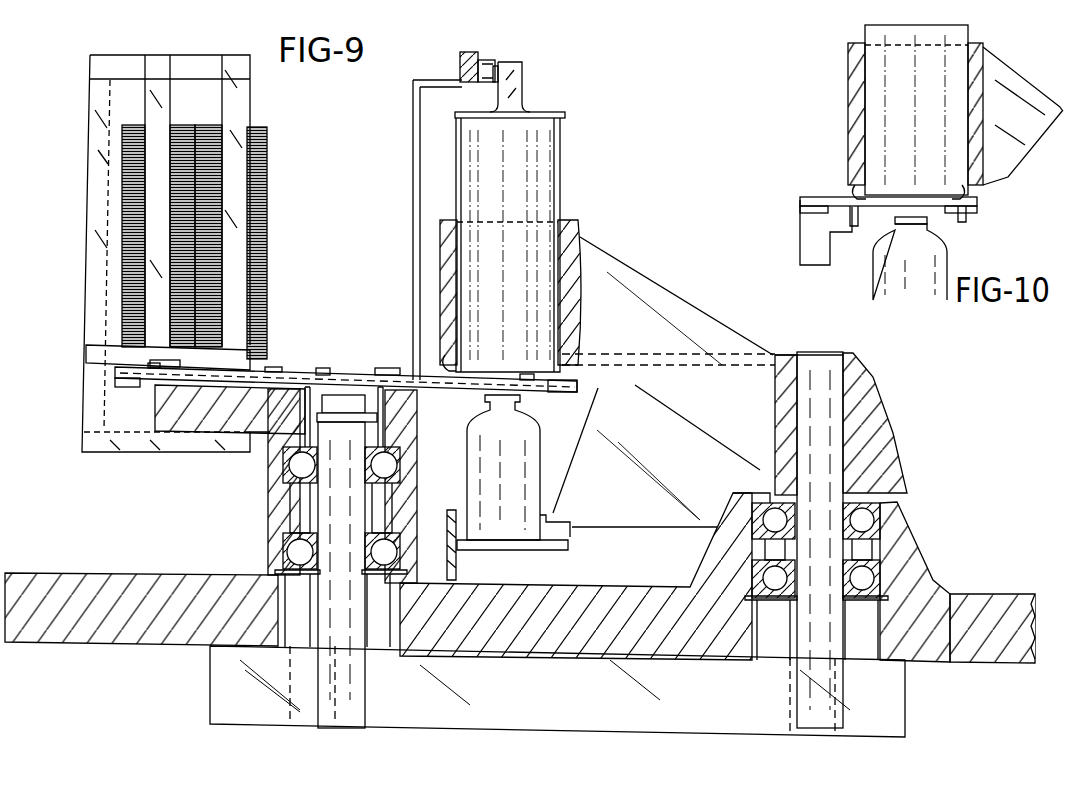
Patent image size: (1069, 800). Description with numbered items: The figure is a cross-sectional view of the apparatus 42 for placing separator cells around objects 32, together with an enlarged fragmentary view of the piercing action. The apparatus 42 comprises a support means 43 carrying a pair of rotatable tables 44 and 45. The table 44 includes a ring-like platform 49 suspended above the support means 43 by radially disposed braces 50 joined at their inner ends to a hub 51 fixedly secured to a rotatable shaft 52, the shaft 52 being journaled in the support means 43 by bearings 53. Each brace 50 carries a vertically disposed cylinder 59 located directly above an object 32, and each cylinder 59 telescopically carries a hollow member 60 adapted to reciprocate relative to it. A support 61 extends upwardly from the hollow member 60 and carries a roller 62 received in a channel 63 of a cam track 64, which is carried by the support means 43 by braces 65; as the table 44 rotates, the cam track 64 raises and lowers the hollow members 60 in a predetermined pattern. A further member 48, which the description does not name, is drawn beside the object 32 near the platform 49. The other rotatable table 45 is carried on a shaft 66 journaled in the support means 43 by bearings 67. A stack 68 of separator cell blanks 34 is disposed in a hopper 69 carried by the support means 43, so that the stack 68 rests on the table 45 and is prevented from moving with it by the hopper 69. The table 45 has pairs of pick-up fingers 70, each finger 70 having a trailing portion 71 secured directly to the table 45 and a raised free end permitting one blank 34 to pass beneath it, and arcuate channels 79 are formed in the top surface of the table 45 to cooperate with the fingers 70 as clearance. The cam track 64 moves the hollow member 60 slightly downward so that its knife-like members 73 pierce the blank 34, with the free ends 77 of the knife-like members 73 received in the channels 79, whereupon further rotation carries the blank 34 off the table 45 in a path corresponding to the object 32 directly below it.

In FIG. 9, the object 32 is at (515, 456).
In FIG. 10, the object 32 is at (923, 280).
In FIG. 9, the separator cell blank 34 is at (267, 195).
In FIG. 10, the separator cell blank 34 is at (930, 224).
In FIG. 9, the apparatus 42 is at (640, 212).
In FIG. 9, the support means 43 is at (530, 654).
In FIG. 9, the rotatable table 44 is at (895, 461).
In FIG. 9, the rotatable table 45 is at (122, 378).
In FIG. 10, the rotatable table 45 is at (800, 200).
In FIG. 9, the bottle guide bracket 48 is at (446, 542).
In FIG. 9, the ring-like platform 49 is at (553, 544).
In FIG. 9, the brace 50 is at (664, 314).
In FIG. 9, the hub 51 is at (851, 376).
In FIG. 9, the shaft 52 is at (820, 354).
In FIG. 9, the bearings 53 is at (873, 518).
In FIG. 9, the cylinder 59 is at (567, 236).
In FIG. 9, the hollow member 60 is at (552, 180).
In FIG. 9, the support 61 is at (520, 84).
In FIG. 9, the roller 62 is at (498, 68).
In FIG. 9, the channel 63 is at (468, 50).
In FIG. 9, the cam track 64 is at (486, 58).
In FIG. 9, the braces 65 is at (413, 202).
In FIG. 9, the shaft 66 is at (326, 636).
In FIG. 9, the bearings 67 is at (300, 546).
In FIG. 9, the stack 68 is at (262, 130).
In FIG. 9, the hopper 69 is at (86, 182).
In FIG. 9, the pick-up finger 70 is at (261, 370).
In FIG. 9, the trailing portion 71 is at (150, 366).
In FIG. 9, the knife-like members 73 is at (452, 356).
In FIG. 10, the knife-like members 73 is at (858, 188).
In FIG. 10, the free ends 77 is at (858, 228).
In FIG. 9, the arcuate channel 79 is at (162, 396).
In FIG. 10, the arcuate channel 79 is at (820, 210).